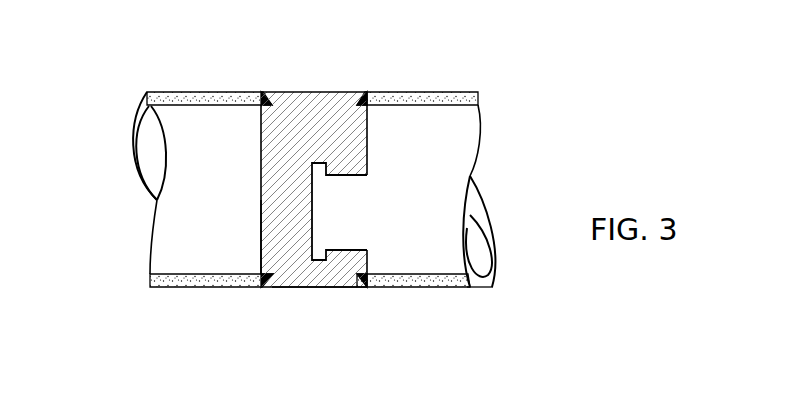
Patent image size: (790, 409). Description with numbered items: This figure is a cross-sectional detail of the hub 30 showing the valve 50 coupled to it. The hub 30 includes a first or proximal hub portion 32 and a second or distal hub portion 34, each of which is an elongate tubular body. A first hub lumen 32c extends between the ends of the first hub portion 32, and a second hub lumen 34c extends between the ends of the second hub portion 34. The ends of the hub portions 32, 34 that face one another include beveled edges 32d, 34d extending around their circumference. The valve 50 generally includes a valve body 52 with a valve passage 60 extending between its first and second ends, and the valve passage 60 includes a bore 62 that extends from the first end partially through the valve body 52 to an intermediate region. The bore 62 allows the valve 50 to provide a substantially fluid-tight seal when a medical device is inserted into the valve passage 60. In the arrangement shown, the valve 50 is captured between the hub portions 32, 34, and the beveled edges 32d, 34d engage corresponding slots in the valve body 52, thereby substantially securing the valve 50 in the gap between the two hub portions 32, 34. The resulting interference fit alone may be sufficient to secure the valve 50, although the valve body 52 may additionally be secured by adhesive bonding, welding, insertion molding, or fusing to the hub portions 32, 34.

The hub 30 is at (171, 58).
The first hub portion 32 is at (163, 288).
The first hub lumen 32c is at (180, 118).
The beveled edge 32d is at (272, 92).
The second hub portion 34 is at (466, 288).
The second hub lumen 34c is at (465, 107).
The beveled edge 34d is at (355, 286).
The valve 50 is at (318, 73).
The valve body 52 is at (297, 289).
The valve passage 60 is at (340, 203).
The bore 62 is at (258, 232).